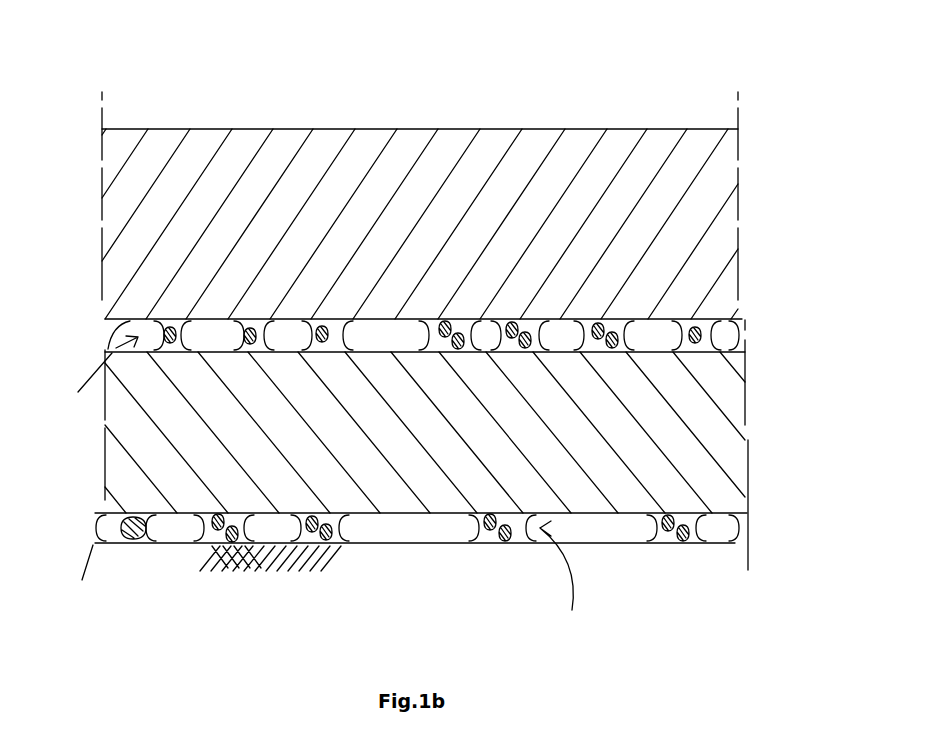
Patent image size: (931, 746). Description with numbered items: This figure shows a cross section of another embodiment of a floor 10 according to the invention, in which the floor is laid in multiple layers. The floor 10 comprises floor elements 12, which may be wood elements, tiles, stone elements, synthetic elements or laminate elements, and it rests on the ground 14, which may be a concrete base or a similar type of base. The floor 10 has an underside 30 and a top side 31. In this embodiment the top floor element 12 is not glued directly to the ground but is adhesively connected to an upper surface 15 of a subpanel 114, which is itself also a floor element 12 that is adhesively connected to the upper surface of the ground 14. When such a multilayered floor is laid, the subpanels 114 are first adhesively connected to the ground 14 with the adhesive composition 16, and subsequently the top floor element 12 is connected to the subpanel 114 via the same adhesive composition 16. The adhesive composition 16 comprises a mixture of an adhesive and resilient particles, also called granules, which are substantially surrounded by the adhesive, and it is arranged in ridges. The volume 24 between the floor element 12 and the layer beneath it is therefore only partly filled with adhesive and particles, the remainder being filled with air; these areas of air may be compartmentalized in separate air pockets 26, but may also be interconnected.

The floor 10 is at (768, 202).
The floor element 12 is at (364, 153).
The ground 14 is at (374, 592).
The surface 15 is at (651, 338).
The adhesive composition 16 is at (322, 488).
The volume 24 is at (392, 347).
The air pockets 26 is at (565, 335).
The underside 30 is at (112, 340).
The top side 31 is at (173, 128).
The subpanel 114 is at (735, 406).